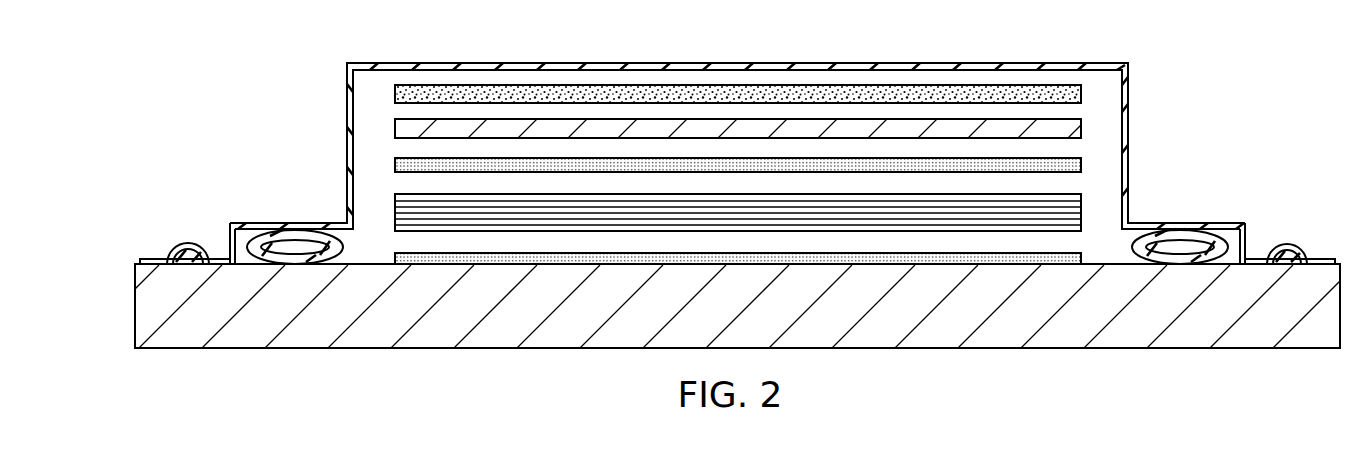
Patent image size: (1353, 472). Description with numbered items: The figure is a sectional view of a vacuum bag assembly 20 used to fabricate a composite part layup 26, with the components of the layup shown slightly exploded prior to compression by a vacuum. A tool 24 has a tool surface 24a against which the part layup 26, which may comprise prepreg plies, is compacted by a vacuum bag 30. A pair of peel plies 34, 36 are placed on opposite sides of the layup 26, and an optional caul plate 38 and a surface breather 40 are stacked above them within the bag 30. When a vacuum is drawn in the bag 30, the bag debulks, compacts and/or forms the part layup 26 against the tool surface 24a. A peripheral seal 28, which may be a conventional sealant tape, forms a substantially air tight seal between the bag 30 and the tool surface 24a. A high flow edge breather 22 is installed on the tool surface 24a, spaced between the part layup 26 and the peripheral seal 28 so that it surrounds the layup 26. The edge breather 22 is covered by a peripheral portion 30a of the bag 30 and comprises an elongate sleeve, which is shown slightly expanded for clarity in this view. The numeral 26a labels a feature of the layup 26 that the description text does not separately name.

The vacuum bag assembly 20 is at (1222, 117).
The high flow edge breather 22 is at (290, 242).
The tool 24 is at (143, 309).
The tool surface 24a is at (371, 260).
The part layup 26 is at (1083, 196).
The side surface of die 26a is at (1086, 210).
The peripheral seal 28 is at (187, 249).
The vacuum bag 30 is at (975, 67).
The peripheral portion of the bag 30a is at (243, 224).
The peel ply 34 is at (1018, 262).
The peel ply 36 is at (395, 165).
The caul plate 38 is at (1083, 129).
The surface breather 40 is at (395, 92).